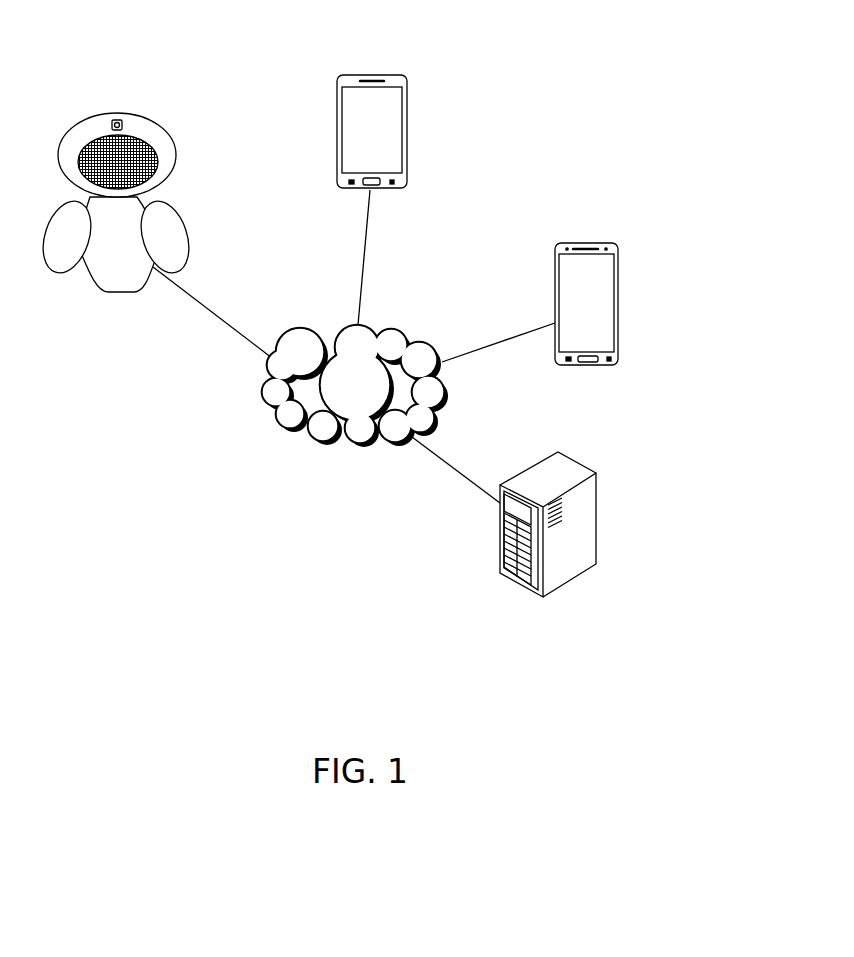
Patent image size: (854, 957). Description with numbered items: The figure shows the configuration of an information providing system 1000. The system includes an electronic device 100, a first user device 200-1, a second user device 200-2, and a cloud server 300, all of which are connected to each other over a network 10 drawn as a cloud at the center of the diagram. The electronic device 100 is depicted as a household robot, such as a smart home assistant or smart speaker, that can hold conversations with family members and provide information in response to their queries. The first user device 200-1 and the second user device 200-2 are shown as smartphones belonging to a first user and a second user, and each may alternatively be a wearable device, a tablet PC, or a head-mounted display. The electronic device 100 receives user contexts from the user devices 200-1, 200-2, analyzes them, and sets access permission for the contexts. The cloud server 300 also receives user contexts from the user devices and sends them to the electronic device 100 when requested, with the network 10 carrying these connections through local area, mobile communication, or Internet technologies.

The information providing system 1000 is at (637, 31).
The electronic device 100 is at (118, 112).
The first user device 200-1 is at (407, 132).
The second user device 200-2 is at (618, 295).
The network 10 is at (402, 323).
The cloud server 300 is at (596, 515).